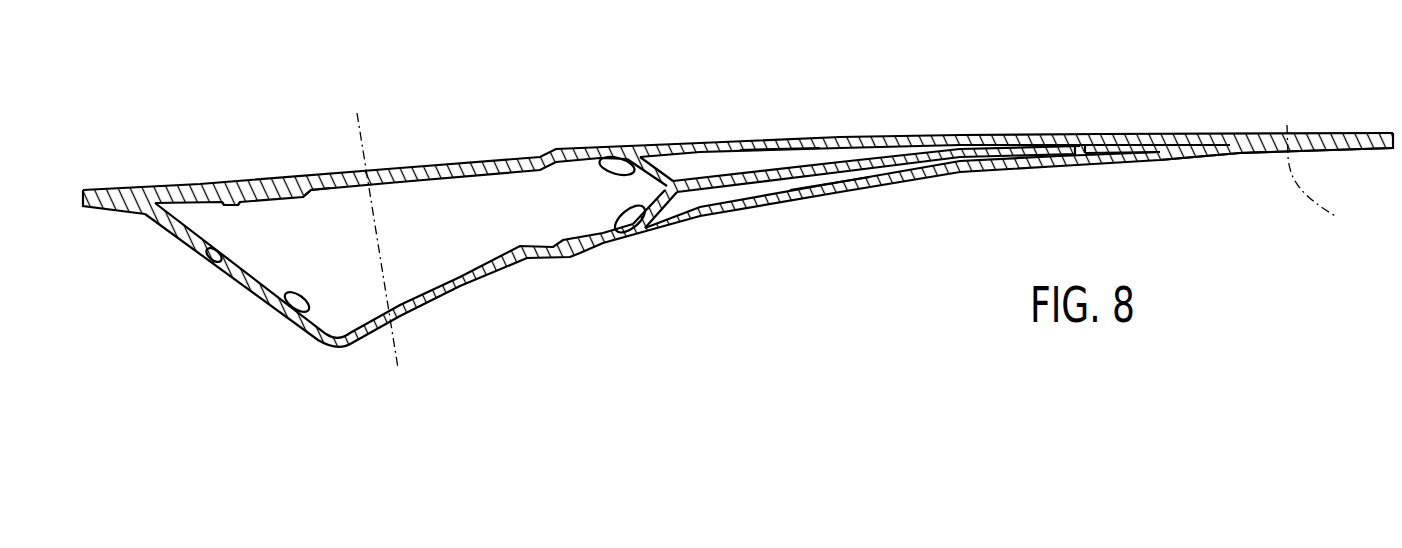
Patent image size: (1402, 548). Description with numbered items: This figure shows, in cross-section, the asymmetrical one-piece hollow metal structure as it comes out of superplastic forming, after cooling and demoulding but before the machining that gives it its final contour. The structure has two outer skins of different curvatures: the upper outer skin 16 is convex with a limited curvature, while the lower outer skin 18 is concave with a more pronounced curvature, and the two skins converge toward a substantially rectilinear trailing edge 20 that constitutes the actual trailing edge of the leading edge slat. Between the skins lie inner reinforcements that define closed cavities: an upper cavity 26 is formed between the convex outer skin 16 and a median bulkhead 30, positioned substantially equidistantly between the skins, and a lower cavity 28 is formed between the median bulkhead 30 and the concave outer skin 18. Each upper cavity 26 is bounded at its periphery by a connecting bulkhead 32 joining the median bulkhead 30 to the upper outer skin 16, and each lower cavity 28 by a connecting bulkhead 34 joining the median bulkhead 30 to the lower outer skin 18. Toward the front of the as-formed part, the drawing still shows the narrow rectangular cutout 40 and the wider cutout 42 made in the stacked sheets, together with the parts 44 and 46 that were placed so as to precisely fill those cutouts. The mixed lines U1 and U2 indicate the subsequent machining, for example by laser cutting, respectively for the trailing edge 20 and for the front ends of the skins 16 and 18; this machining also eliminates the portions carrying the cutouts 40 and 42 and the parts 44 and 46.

The upper outer skin 16 is at (677, 150).
The lower outer skin 18 is at (740, 207).
The trailing edge 20 is at (1195, 152).
The upper cavity 26 is at (777, 157).
The lower cavity 28 is at (830, 178).
The median bulkhead 30 is at (873, 160).
The connecting bulkhead 32 is at (600, 157).
The connecting bulkhead 34 is at (622, 218).
The rectangular cutout 40 is at (217, 265).
The cutout 42 is at (280, 307).
The part 44 is at (262, 200).
The part 46 is at (333, 186).
The mixed line U1 is at (1331, 180).
The mixed line U2 is at (357, 133).